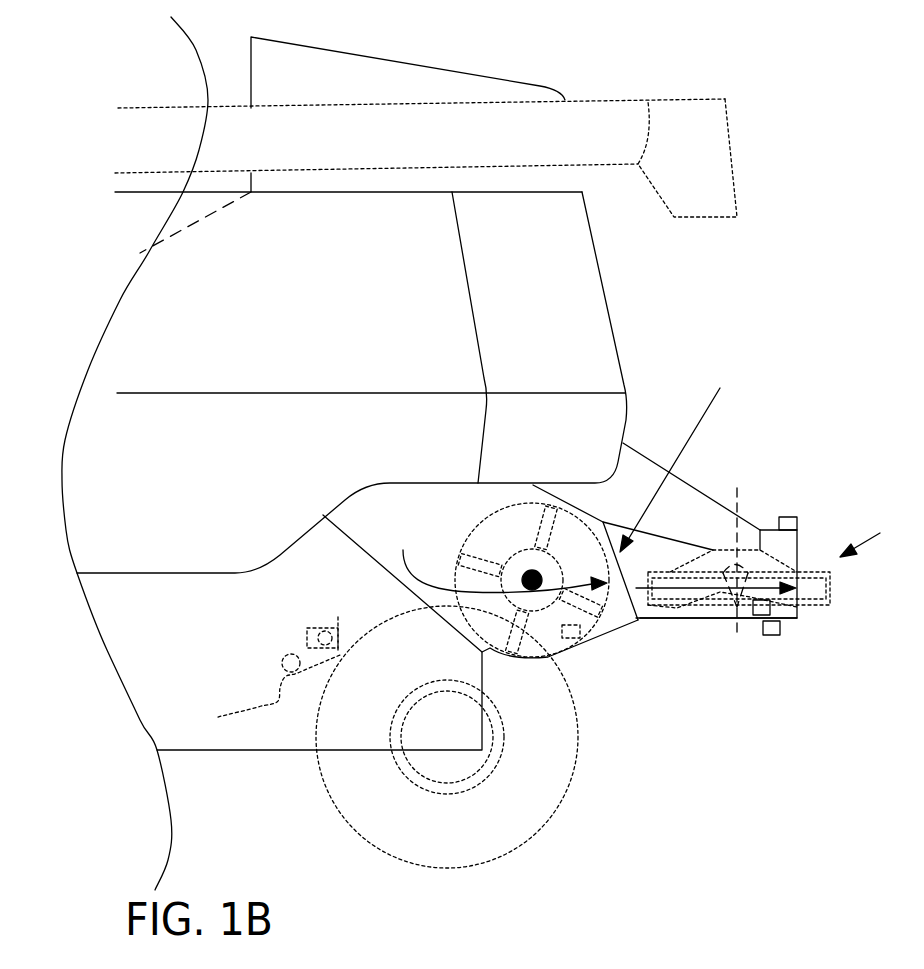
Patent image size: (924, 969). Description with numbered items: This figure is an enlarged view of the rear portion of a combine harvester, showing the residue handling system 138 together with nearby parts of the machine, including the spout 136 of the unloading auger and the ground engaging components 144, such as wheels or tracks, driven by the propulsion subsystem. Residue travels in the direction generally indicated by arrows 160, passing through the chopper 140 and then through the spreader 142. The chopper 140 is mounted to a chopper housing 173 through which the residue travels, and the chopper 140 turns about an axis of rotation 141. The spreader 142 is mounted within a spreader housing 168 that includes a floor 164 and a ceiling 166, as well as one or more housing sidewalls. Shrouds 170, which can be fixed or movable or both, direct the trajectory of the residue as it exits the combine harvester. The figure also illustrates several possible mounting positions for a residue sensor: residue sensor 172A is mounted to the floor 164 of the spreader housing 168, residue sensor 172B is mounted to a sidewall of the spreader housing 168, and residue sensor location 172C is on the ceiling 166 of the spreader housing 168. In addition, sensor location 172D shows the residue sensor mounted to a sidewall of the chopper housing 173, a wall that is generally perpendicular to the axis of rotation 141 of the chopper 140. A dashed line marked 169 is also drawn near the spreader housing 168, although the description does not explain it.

The spout 136 is at (687, 96).
The residue handling system 138 is at (702, 462).
The chopper 140 is at (550, 660).
The axis of rotation 141 is at (539, 576).
The spreader 142 is at (708, 621).
The ground engaging components 144 is at (412, 863).
The arrows 160 is at (417, 573).
The floor 164 is at (717, 619).
The ceiling 166 is at (762, 528).
The spreader housing 168 is at (790, 550).
The sensor axis 169 is at (738, 507).
The shrouds 170 is at (876, 535).
The residue sensor 172A is at (781, 632).
The residue sensor 172B is at (771, 609).
The residue sensor location 172C is at (798, 516).
The sensor location 172D is at (582, 637).
The chopper housing 173 is at (682, 457).